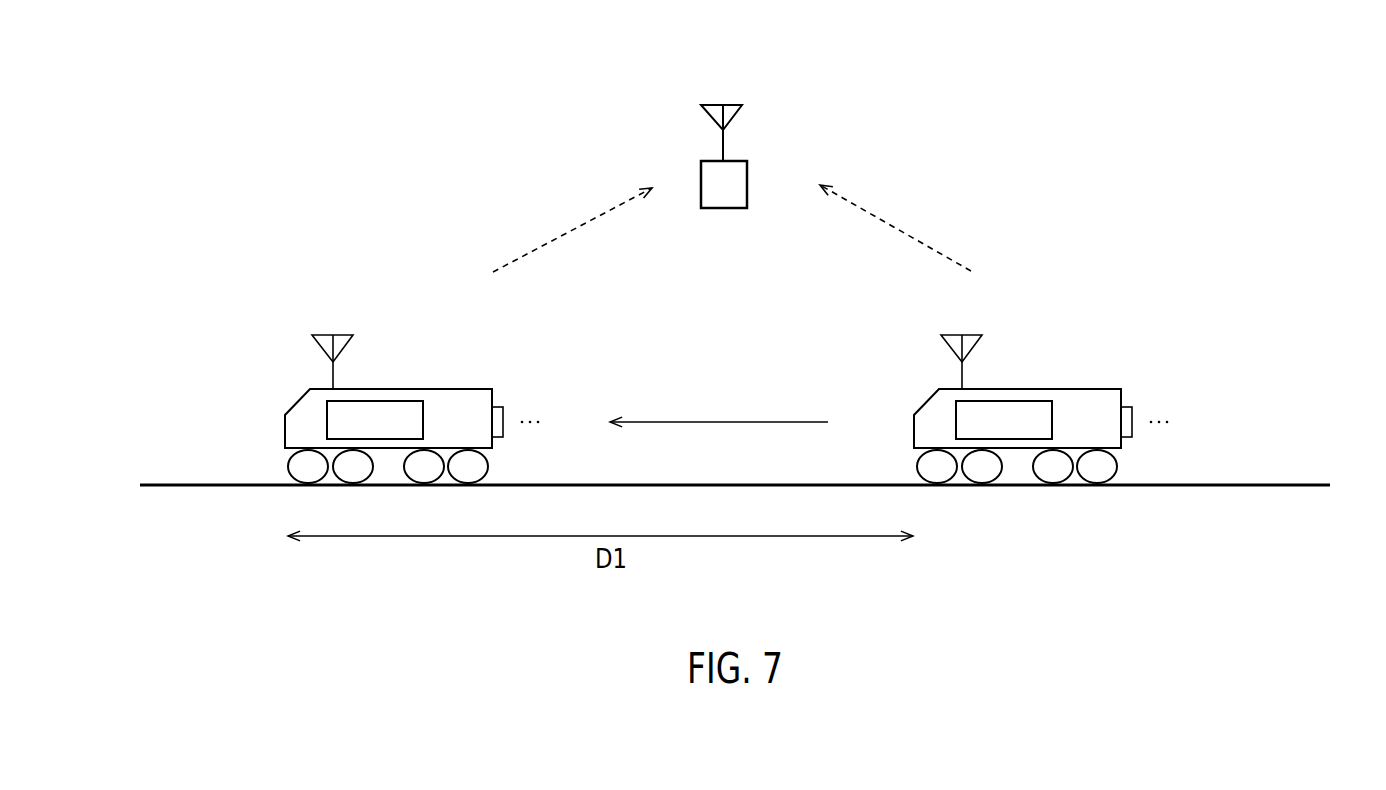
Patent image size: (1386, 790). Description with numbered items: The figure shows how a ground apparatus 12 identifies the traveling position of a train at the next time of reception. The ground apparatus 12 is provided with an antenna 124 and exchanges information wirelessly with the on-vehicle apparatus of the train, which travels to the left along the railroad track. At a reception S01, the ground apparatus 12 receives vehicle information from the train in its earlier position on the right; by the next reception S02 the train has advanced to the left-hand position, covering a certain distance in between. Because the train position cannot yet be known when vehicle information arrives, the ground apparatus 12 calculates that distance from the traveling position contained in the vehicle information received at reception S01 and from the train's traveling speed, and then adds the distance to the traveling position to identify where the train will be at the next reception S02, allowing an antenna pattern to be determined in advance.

The ground apparatus 12 is at (881, 131).
The antenna 124 is at (735, 103).
The reception S01 is at (898, 230).
The next reception S02 is at (565, 233).